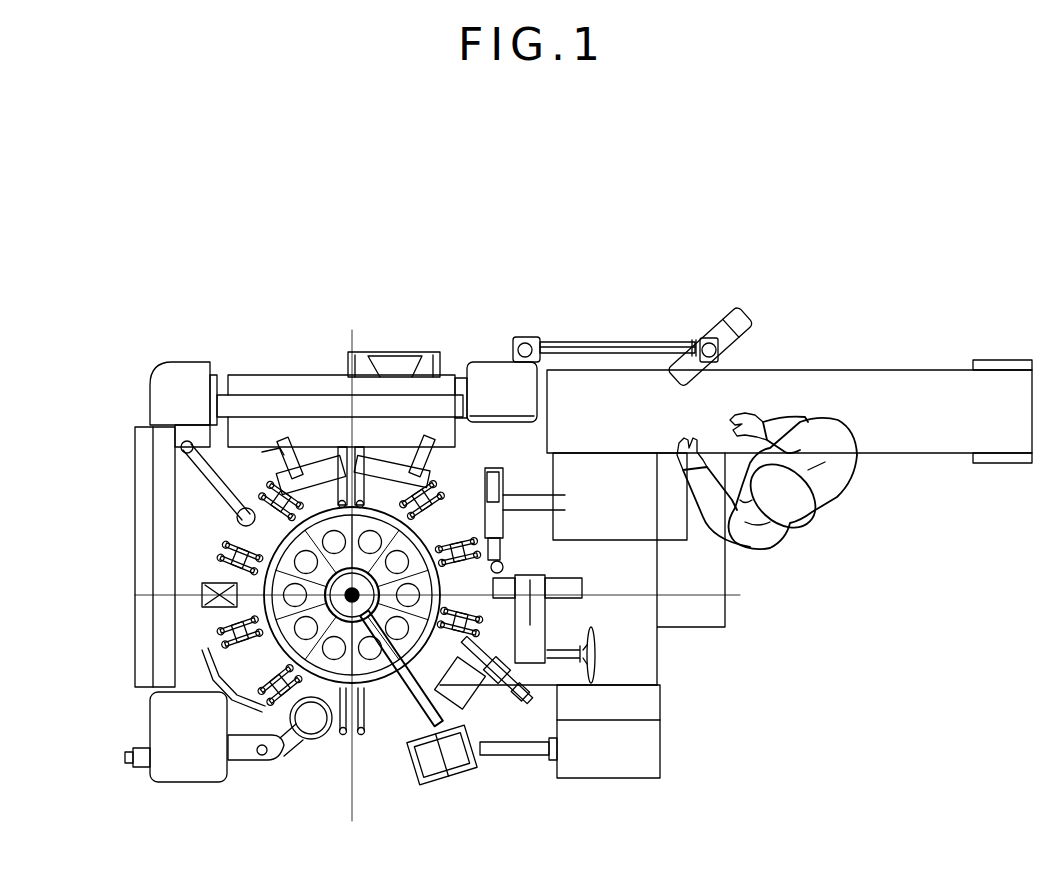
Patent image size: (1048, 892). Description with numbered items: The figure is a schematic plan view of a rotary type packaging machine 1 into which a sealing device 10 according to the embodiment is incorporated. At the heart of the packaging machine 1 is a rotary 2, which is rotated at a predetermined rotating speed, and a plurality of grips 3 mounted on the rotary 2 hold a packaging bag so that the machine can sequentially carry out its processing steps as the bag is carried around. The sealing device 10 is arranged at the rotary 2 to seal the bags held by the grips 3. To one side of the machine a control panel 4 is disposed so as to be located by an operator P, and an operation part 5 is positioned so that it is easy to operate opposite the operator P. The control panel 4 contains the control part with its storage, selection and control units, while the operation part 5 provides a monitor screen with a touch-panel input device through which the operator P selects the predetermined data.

The rotary type packaging machine 1 is at (200, 310).
The rotary 2 is at (284, 554).
The grips 3 is at (268, 650).
The control panel 4 is at (707, 573).
The operation part 5 is at (730, 327).
The sealing device 10 is at (301, 457).
The operator P is at (778, 525).